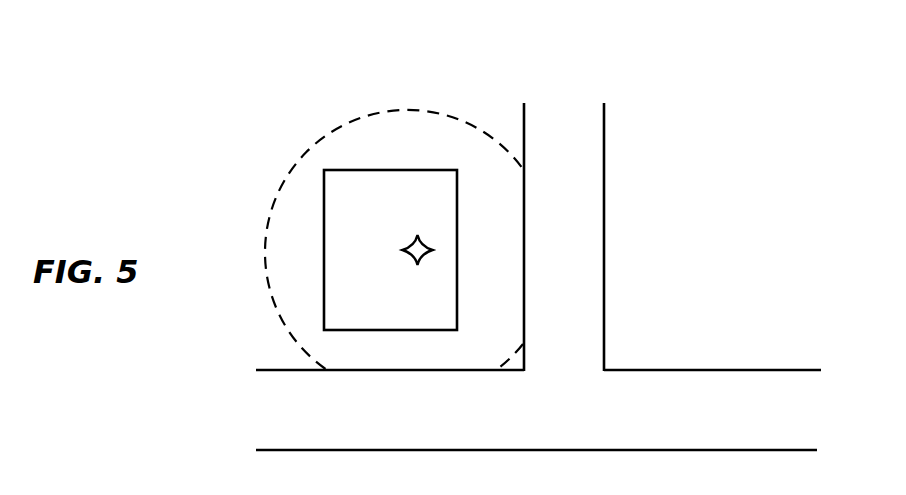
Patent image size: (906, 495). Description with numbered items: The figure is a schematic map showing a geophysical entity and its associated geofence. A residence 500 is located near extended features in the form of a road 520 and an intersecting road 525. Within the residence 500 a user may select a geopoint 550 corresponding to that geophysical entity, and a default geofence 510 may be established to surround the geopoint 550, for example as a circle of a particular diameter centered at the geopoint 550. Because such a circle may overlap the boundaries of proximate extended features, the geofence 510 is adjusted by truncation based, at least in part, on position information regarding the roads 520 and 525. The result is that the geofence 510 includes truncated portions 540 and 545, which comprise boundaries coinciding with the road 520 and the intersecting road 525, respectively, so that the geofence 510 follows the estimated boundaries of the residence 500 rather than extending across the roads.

The residence 500 is at (323, 290).
The geofence 510 is at (292, 180).
The road 520 is at (605, 320).
The intersecting road 525 is at (704, 369).
The truncated portion 540 is at (525, 250).
The truncated portion 545 is at (402, 371).
The geopoint 550 is at (404, 237).